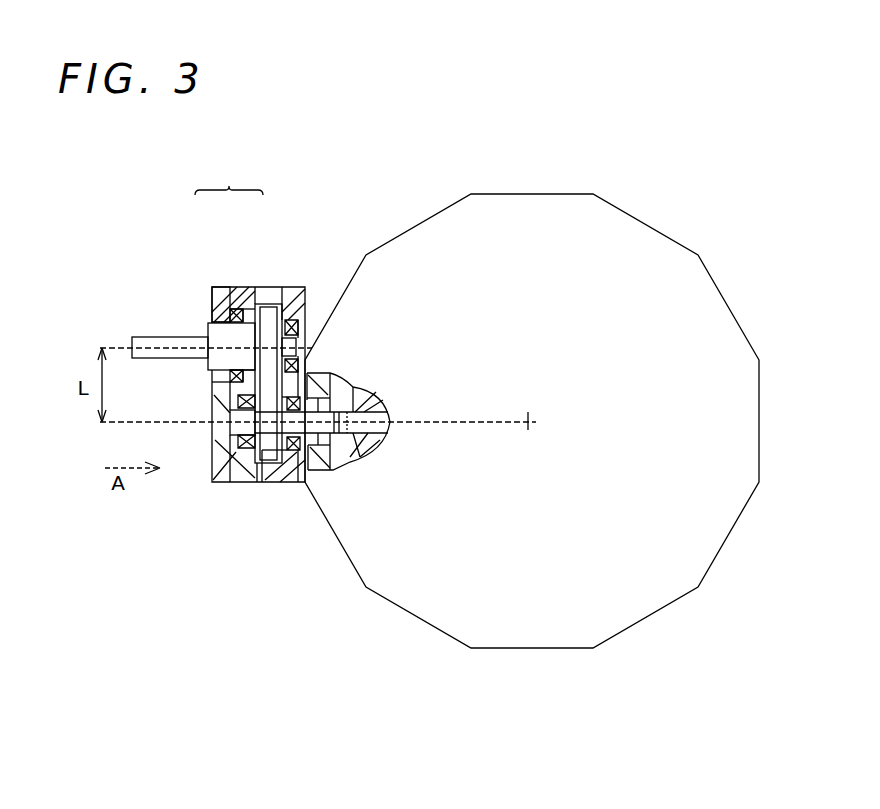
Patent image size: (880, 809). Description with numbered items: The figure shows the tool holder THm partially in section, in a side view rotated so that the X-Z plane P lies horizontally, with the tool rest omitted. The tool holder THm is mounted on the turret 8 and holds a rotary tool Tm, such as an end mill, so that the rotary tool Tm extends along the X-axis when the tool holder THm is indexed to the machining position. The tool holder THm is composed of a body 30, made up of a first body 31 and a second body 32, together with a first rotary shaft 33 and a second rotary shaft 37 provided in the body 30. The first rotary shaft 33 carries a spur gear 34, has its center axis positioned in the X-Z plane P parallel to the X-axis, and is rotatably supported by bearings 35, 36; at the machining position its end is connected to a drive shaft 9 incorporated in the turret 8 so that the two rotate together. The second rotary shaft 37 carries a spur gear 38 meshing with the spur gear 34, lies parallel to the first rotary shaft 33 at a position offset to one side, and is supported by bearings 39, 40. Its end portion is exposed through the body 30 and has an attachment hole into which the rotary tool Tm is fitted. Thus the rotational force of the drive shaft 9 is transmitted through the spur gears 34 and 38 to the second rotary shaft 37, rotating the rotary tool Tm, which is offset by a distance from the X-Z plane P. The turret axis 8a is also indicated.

The turret 8 is at (657, 233).
The hand wheel rotation axis 8a is at (528, 420).
The drive shaft 9 is at (363, 428).
The body 30 is at (229, 179).
The first body 31 is at (277, 300).
The second body 32 is at (240, 288).
The first rotary shaft 33 is at (305, 440).
The spur gear 34 is at (263, 450).
The bearing 35 is at (292, 452).
The bearing 36 is at (240, 445).
The second rotary shaft 37 is at (212, 303).
The spur gear 38 is at (279, 300).
The bearing 39 is at (300, 318).
The bearing 40 is at (233, 305).
The rotary tool Tm is at (157, 340).
The tool holder THm is at (295, 232).
The X-Z plane P is at (476, 421).